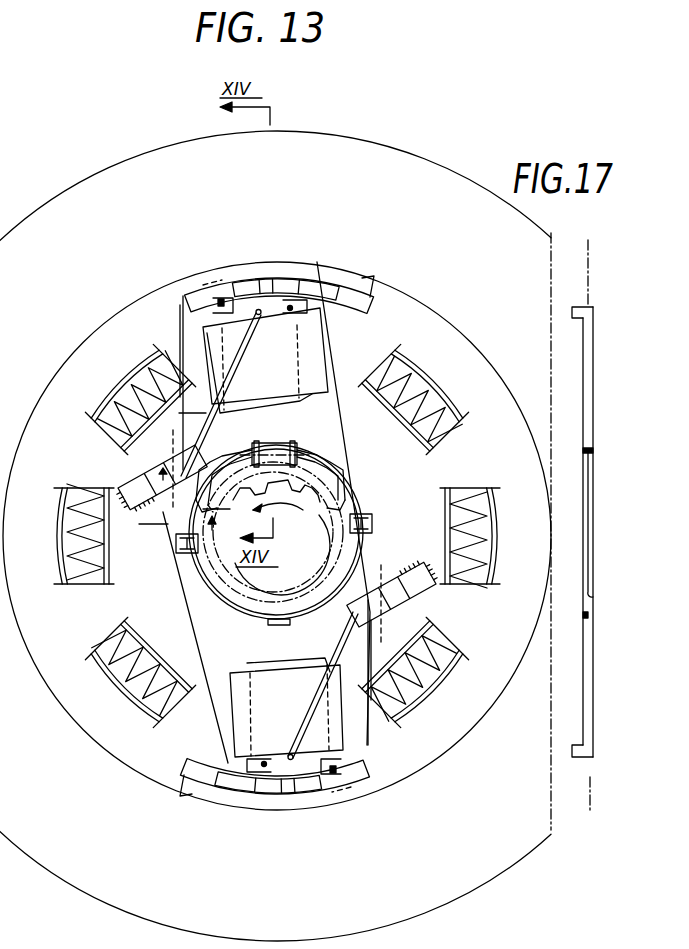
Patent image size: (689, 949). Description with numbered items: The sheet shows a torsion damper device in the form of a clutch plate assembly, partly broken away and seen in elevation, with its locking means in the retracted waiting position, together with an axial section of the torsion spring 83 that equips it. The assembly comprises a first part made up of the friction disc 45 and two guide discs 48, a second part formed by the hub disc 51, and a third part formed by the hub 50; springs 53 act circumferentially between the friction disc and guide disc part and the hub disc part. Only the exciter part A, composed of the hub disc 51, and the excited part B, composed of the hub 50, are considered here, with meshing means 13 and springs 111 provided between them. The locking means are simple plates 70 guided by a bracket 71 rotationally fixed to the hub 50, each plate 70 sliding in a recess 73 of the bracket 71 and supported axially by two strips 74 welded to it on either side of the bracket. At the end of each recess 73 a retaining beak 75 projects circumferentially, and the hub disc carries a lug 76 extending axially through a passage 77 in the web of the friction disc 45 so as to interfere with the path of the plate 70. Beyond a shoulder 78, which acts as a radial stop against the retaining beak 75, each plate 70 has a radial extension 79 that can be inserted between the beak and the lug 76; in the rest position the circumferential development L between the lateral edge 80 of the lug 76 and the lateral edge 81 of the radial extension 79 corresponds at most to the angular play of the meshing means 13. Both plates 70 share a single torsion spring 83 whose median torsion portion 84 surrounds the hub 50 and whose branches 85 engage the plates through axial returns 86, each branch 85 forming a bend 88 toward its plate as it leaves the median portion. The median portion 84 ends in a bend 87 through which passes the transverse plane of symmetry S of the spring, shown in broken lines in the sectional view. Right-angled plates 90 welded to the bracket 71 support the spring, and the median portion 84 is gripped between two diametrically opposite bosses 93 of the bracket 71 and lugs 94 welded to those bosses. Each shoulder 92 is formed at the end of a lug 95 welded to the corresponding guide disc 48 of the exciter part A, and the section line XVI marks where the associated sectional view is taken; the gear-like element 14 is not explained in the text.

In FIG. 13, the friction disc 45 is at (446, 158).
In FIG. 13, the guide disc 48 is at (58, 438).
In FIG. 13, the springs 53 is at (135, 375).
In FIG. 13, the plate 70 is at (292, 306).
In FIG. 13, the bracket 71 is at (352, 348).
In FIG. 13, the recess 73 is at (188, 306).
In FIG. 13, the strips 74 is at (262, 394).
In FIG. 13, the retaining beak 75 is at (225, 276).
In FIG. 13, the lug 76 is at (290, 282).
In FIG. 13, the passage 77 is at (366, 282).
In FIG. 13, the shoulder 78 is at (200, 320).
In FIG. 13, the radial extension 79 is at (264, 280).
In FIG. 13, the lateral edge 80 is at (243, 280).
In FIG. 13, the lateral edge 81 is at (252, 325).
In FIG. 13, the torsion spring 83 is at (213, 605).
In FIG. 17, the torsion spring 83 is at (576, 580).
In FIG. 13, the median torsion portion 84 is at (203, 585).
In FIG. 17, the median torsion portion 84 is at (580, 458).
In FIG. 13, the branch 85 is at (243, 353).
In FIG. 17, the branch 85 is at (584, 374).
In FIG. 17, the axial return 86 is at (574, 320).
In FIG. 17, the bend 87 is at (584, 592).
In FIG. 13, the bend 88 is at (178, 432).
In FIG. 13, the right-angled plates 90 is at (276, 626).
In FIG. 13, the shoulder 92 is at (182, 452).
In FIG. 13, the bosses 93 is at (178, 550).
In FIG. 13, the lugs 94 is at (196, 572).
In FIG. 13, the lug 95 is at (140, 480).
In FIG. 13, the springs 111 is at (286, 443).
In FIG. 13, the meshing means 13 is at (240, 460).
In FIG. 13, the gear 14 is at (262, 470).
In FIG. 13, the hub 50 is at (345, 475).
In FIG. 13, the hub disc 51 is at (330, 445).
In FIG. 13, the exciter part A is at (293, 534).
In FIG. 13, the excited part B is at (328, 432).
In FIG. 13, the circumferential development L is at (273, 270).
In FIG. 17, the plane of symmetry S is at (587, 270).
In FIG. 13, the section line XVI is at (113, 472).